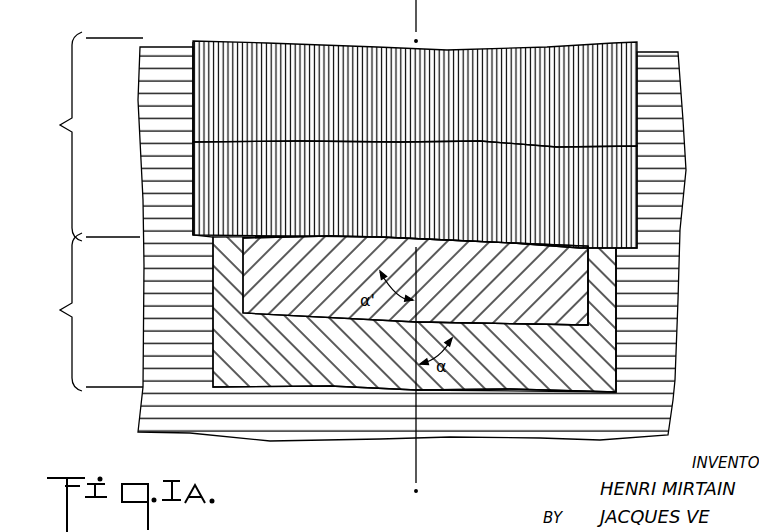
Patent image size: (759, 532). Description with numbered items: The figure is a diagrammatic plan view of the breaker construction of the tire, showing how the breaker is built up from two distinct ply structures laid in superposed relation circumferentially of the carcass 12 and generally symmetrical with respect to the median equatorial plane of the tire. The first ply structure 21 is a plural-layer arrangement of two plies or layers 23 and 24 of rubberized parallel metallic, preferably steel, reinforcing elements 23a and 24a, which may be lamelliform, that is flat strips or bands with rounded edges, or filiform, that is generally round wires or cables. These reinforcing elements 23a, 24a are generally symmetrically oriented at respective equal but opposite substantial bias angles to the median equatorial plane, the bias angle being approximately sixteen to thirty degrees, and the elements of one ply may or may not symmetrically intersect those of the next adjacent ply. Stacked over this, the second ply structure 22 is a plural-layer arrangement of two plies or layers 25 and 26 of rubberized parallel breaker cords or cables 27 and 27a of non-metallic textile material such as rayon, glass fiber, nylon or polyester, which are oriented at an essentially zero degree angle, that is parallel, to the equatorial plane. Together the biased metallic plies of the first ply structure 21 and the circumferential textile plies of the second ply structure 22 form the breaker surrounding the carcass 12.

The carcass 12 is at (162, 52).
The second ply structure 22 is at (387, 140).
The ply 26 is at (191, 93).
The ply 25 is at (195, 168).
The breaker cords 27a is at (625, 106).
The breaker cords 27 is at (617, 201).
The first ply structure 21 is at (388, 312).
The ply 24 is at (245, 263).
The reinforcing elements 24a is at (575, 292).
The ply 23 is at (217, 355).
The reinforcing elements 23a is at (603, 348).